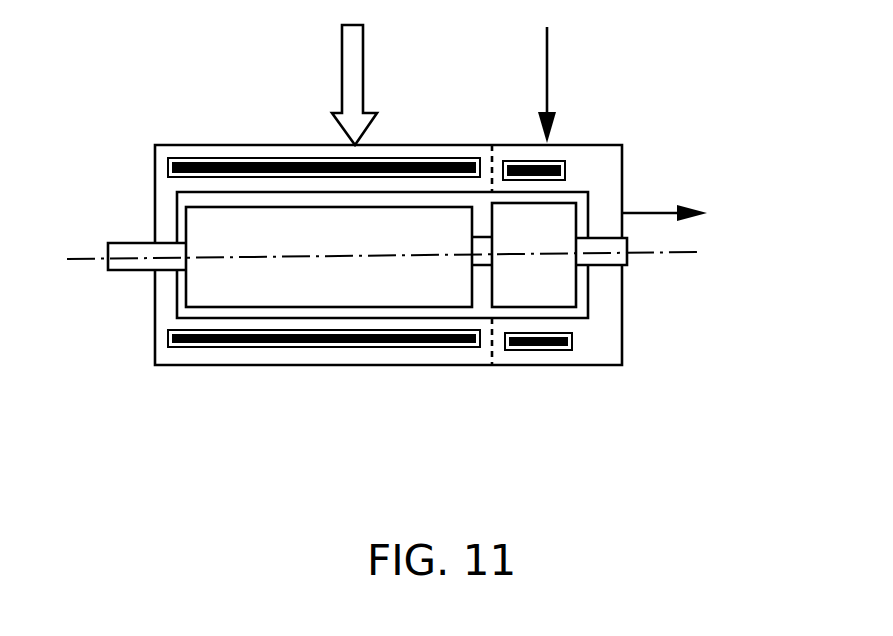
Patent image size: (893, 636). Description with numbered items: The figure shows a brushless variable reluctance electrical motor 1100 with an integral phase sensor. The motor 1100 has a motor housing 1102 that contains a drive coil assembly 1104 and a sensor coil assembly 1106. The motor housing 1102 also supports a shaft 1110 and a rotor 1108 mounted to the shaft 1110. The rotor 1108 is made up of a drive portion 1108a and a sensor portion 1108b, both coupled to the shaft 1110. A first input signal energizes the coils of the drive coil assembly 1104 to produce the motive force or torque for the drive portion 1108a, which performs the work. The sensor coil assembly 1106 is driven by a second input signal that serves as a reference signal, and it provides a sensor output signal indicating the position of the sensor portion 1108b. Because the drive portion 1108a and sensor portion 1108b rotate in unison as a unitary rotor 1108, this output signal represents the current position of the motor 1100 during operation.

The motor 1100 is at (117, 72).
The motor housing 1102 is at (624, 160).
The drive coil assembly 1104 is at (208, 158).
The sensor coil assembly 1106 is at (530, 352).
The rotor 1108 is at (480, 200).
The drive portion 1108a is at (329, 257).
The sensor portion 1108b is at (534, 255).
The shaft 1110 is at (132, 243).